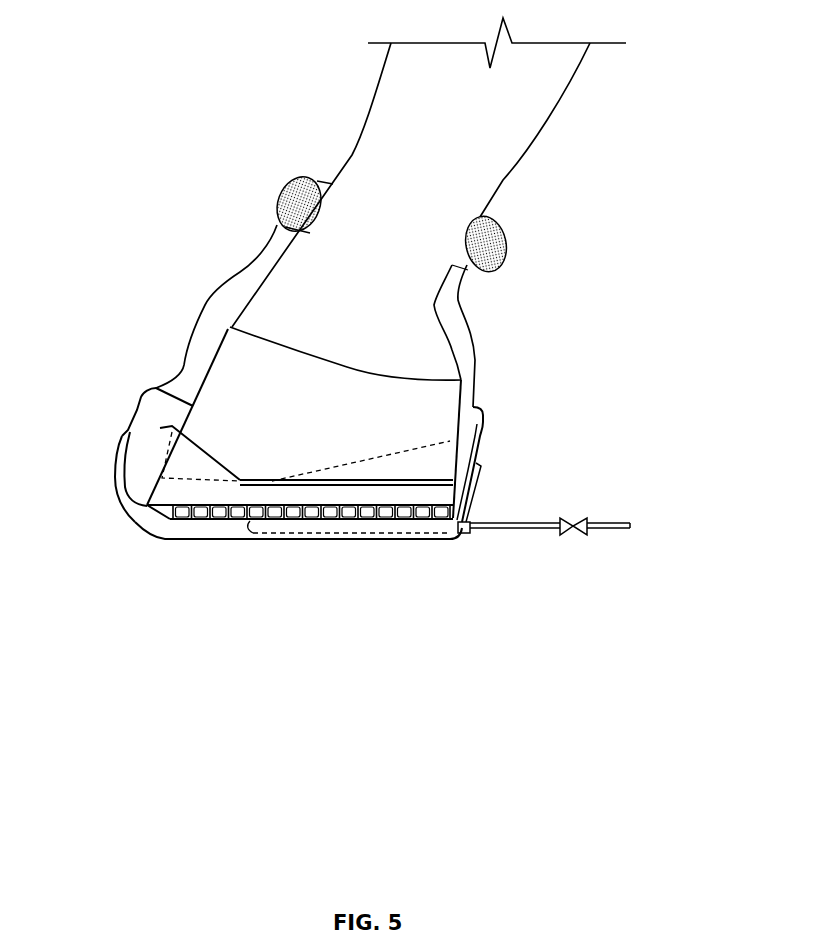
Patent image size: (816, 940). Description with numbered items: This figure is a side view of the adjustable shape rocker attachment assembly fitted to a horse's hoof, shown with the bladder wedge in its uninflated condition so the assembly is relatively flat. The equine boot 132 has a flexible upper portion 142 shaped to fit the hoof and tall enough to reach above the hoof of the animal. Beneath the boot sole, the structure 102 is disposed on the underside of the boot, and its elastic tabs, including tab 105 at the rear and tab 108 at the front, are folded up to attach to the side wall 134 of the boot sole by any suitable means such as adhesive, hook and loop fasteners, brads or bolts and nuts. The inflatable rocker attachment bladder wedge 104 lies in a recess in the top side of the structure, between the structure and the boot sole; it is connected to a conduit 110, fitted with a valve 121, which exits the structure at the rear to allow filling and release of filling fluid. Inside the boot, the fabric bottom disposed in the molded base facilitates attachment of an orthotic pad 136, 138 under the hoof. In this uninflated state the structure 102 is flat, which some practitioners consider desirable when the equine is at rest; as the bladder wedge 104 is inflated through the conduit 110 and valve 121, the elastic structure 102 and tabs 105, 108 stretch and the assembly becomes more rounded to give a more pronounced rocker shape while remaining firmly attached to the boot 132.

The structure 102 is at (157, 525).
The inflatable rocker attachment bladder wedge 104 is at (392, 527).
The tab 105 is at (474, 490).
The tab 108 is at (115, 457).
The conduit 110 is at (502, 530).
The valve 121 is at (587, 520).
The equine boot 132 is at (471, 335).
The side wall 134 is at (483, 430).
The orthotic pad 136 is at (168, 447).
The orthotic pad 138 is at (440, 463).
The upper portion of the boot 142 is at (525, 130).